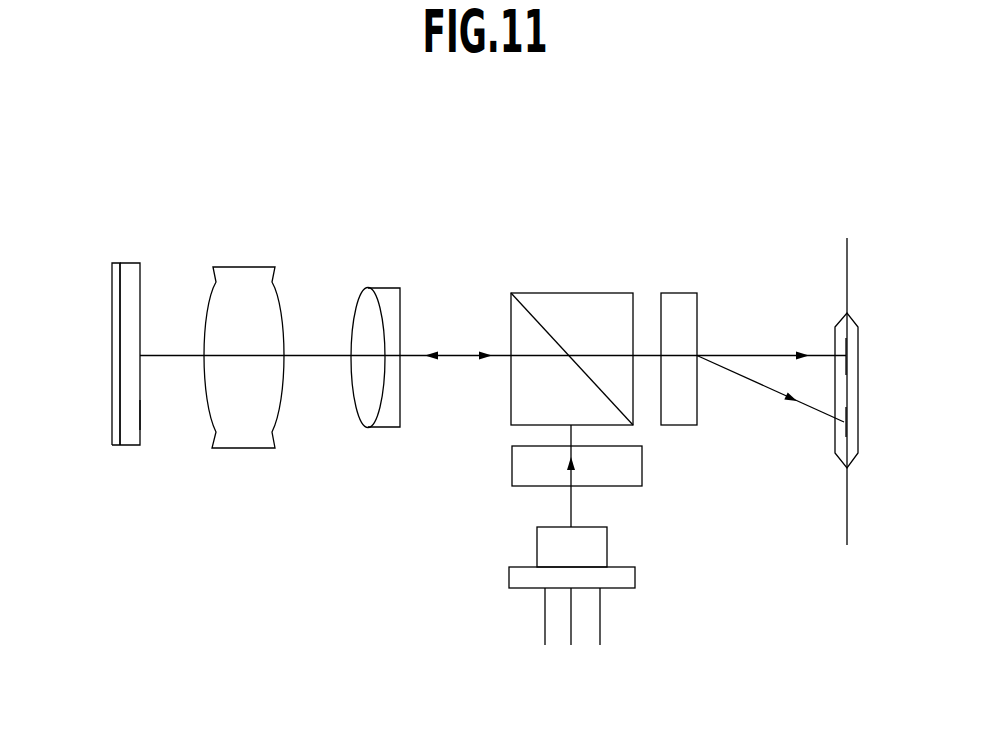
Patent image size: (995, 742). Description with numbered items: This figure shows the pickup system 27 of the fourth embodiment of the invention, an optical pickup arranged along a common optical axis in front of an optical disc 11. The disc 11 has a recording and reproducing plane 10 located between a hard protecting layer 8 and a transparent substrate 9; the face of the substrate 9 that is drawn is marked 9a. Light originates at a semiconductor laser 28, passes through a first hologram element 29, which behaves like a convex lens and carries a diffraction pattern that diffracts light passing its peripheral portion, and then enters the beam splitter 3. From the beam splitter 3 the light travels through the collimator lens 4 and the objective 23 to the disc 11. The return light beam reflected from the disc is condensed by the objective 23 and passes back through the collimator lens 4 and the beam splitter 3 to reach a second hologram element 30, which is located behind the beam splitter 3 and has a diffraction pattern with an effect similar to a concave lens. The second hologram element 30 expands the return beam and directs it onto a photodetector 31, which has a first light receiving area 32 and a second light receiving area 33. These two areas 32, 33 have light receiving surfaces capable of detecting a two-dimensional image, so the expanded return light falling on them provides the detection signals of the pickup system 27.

The optical disc 11 is at (55, 191).
The hard protecting layer 8 is at (112, 283).
The transparent substrate 9 is at (137, 272).
The substrate surface 9a is at (141, 415).
The recording and reproducing plane 10 is at (121, 263).
The objective 23 is at (243, 267).
The collimator lens 4 is at (383, 288).
The pickup system 27 is at (548, 235).
The beam splitter 3 is at (572, 293).
The second hologram element 30 is at (675, 293).
The first hologram element 29 is at (635, 468).
The semiconductor laser 28 is at (600, 540).
The photodetector 31 is at (852, 316).
The first light receiving area 32 is at (845, 347).
The second light receiving area 33 is at (845, 431).